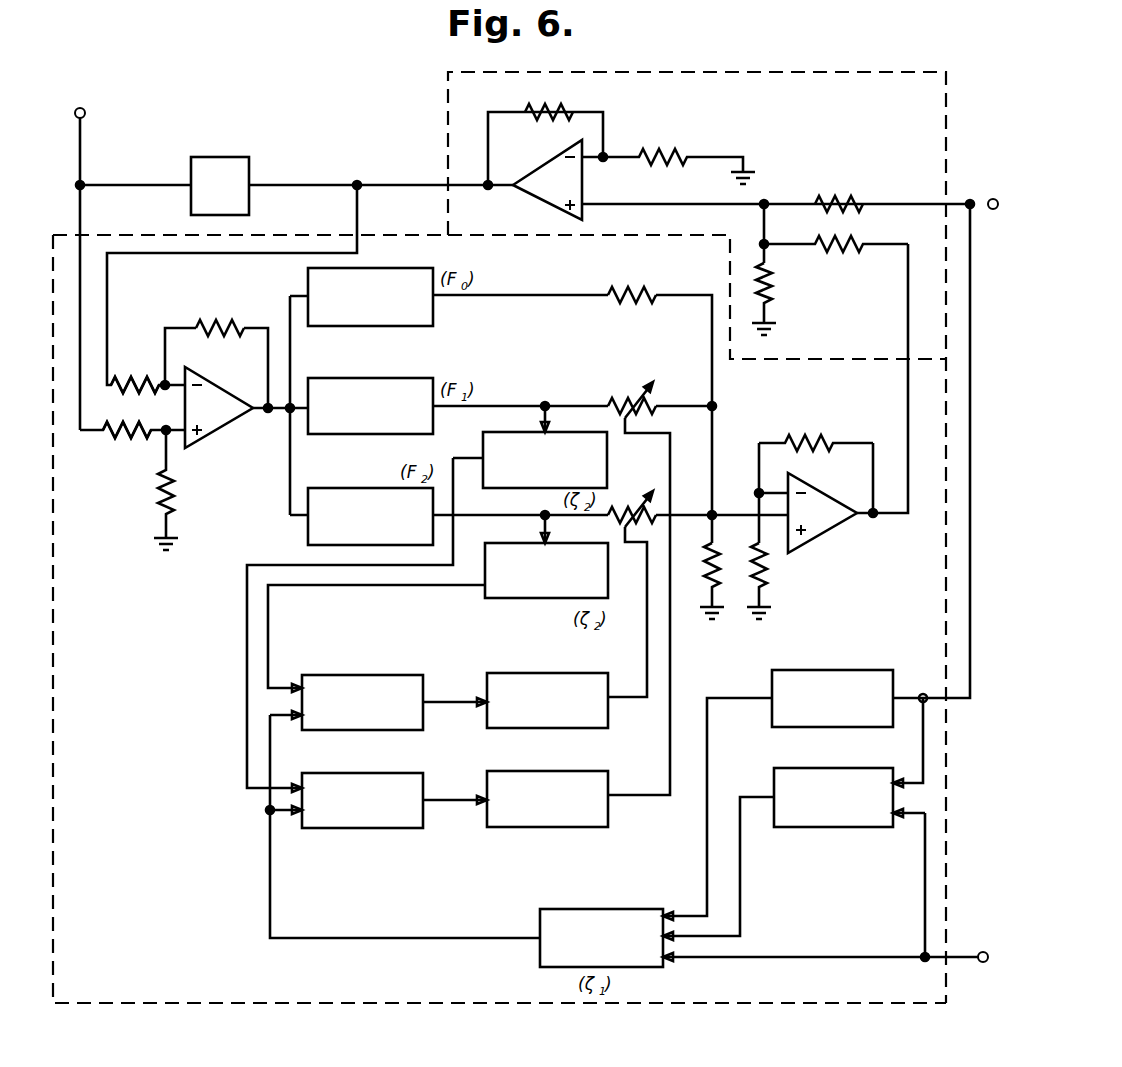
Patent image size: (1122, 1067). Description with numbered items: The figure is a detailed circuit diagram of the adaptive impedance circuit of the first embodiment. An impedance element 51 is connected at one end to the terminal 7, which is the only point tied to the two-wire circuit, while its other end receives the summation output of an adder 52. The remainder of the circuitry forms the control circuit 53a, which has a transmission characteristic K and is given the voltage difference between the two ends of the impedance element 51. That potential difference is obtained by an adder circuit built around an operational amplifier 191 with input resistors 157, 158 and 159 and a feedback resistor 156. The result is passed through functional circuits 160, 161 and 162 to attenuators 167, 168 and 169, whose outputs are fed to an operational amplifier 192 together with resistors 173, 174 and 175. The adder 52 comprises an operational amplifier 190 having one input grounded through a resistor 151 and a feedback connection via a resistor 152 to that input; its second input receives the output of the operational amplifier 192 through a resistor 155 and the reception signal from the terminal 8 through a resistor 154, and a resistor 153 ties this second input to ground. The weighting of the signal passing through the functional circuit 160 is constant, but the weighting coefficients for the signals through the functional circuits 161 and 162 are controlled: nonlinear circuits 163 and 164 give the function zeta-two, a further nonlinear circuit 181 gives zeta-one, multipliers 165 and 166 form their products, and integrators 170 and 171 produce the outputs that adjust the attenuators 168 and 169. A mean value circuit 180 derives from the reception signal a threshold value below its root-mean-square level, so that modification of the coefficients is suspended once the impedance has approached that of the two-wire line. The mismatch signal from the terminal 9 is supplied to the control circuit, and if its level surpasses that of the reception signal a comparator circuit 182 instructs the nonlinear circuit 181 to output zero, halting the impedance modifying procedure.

The terminal 7 is at (85, 111).
The terminal 8 is at (989, 199).
The terminal 9 is at (983, 952).
The impedance element 51 is at (243, 157).
The adder 52 is at (918, 72).
The control circuit 53a is at (835, 1003).
The resistor 151 is at (665, 153).
The resistor 152 is at (575, 110).
The resistor 153 is at (768, 302).
The resistor 154 is at (847, 196).
The resistor 155 is at (838, 252).
The feedback resistor 156 is at (223, 320).
The input resistor 157 is at (160, 500).
The input resistor 158 is at (123, 438).
The input resistor 159 is at (139, 377).
The functional circuit 160 is at (357, 327).
The functional circuit 161 is at (367, 437).
The functional circuit 162 is at (308, 538).
The nonlinear circuit 163 is at (483, 437).
The nonlinear circuit 164 is at (497, 593).
The multiplier 165 is at (358, 675).
The multiplier 166 is at (355, 828).
The attenuator 167 is at (627, 303).
The attenuator 168 is at (623, 392).
The attenuator 169 is at (635, 494).
The integrator 170 is at (538, 673).
The integrator 171 is at (548, 827).
The resistor 173 is at (767, 580).
The resistor 174 is at (819, 437).
The resistor 175 is at (716, 576).
The mean value circuit 180 is at (885, 670).
The nonlinear circuit 181 is at (607, 909).
The comparator circuit 182 is at (853, 827).
The operational amplifier 190 is at (541, 160).
The operational amplifier 191 is at (207, 432).
The operational amplifier 192 is at (830, 497).